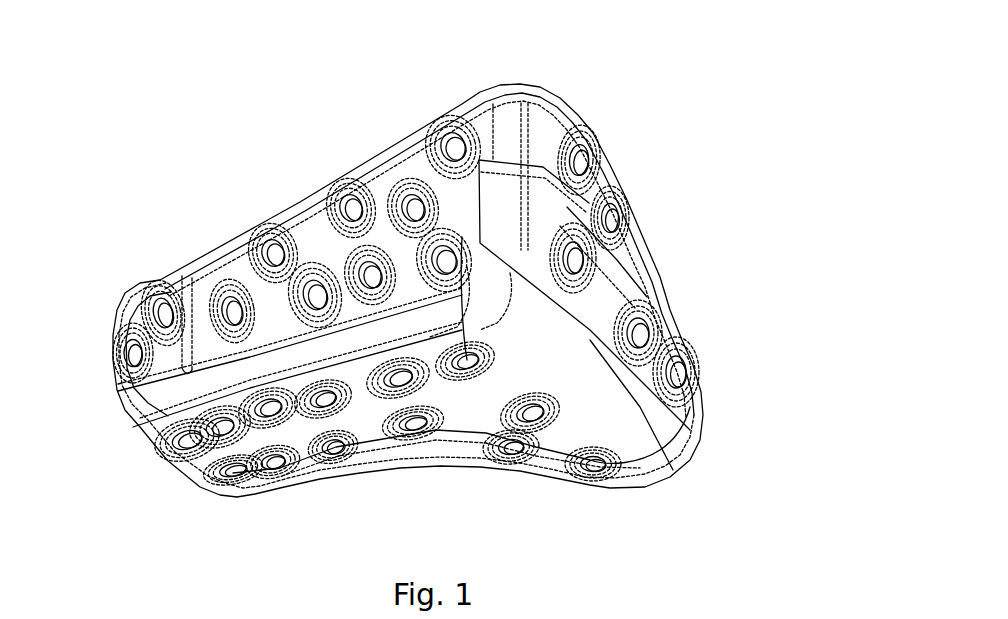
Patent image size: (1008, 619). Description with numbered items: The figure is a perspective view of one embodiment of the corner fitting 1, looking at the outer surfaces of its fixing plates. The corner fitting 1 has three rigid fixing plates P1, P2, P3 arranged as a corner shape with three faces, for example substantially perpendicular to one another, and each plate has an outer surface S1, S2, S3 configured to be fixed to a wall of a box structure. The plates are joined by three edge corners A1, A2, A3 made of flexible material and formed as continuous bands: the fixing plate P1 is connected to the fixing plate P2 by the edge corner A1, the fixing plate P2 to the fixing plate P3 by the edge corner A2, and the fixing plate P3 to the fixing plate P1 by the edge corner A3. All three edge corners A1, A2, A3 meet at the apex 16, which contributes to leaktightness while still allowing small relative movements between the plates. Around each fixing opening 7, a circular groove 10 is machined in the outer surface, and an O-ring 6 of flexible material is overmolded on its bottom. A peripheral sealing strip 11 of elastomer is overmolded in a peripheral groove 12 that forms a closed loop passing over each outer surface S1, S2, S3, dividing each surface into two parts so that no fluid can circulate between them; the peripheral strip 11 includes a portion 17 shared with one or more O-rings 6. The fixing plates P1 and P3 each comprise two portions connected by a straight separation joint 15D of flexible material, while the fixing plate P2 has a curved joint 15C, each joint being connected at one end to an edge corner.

The corner fitting 1 is at (182, 127).
The O-ring 6 is at (232, 290).
The fixing opening 7 is at (349, 200).
The circular groove 10 is at (460, 100).
The peripheral sealing strip 11 is at (190, 310).
The peripheral groove 12 is at (330, 247).
The curved joint 15C is at (627, 277).
The straight joint 15D is at (183, 357).
The apex 16 is at (485, 300).
The shared portion 17 is at (200, 295).
The edge corner A1 is at (503, 130).
The edge corner A2 is at (657, 430).
The edge corner A3 is at (277, 367).
The fixing plate P1 is at (386, 187).
The fixing plate P2 is at (553, 127).
The fixing plate P3 is at (479, 440).
The outer surface S1 is at (307, 228).
The outer surface S2 is at (638, 266).
The outer surface S3 is at (367, 410).